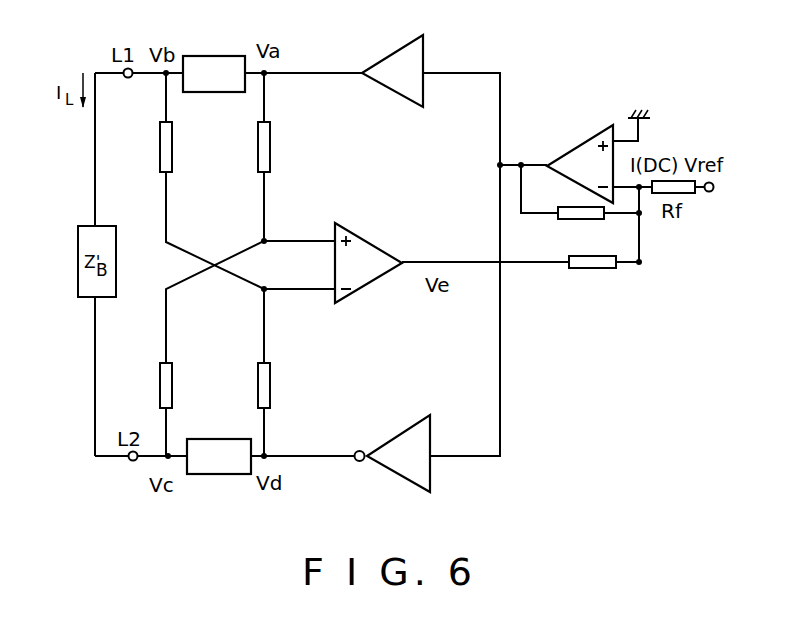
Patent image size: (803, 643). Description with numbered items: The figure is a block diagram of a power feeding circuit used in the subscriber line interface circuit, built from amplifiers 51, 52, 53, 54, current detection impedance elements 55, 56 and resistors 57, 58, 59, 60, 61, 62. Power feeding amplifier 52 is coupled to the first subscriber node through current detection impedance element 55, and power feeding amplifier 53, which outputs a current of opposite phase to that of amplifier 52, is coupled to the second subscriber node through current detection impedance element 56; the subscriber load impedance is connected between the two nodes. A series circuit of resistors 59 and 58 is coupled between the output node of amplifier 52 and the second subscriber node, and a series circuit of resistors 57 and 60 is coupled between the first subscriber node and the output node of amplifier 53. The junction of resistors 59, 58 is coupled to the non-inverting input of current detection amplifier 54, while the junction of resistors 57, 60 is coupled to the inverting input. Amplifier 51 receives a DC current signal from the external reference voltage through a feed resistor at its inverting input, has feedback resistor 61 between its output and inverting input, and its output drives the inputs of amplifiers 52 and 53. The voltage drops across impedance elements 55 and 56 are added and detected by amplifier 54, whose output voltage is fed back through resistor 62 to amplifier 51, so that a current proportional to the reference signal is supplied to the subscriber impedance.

The amplifier 51 is at (584, 137).
The power feeding amplifier 52 is at (425, 48).
The power feeding amplifier 53 is at (381, 468).
The current detection amplifier 54 is at (378, 241).
The current detection impedance element 55 is at (233, 54).
The current detection impedance element 56 is at (222, 474).
The resistor 57 is at (172, 150).
The resistor 58 is at (172, 381).
The resistor 59 is at (270, 150).
The resistor 60 is at (270, 385).
The feedback resistor 61 is at (578, 219).
The resistor 62 is at (583, 268).